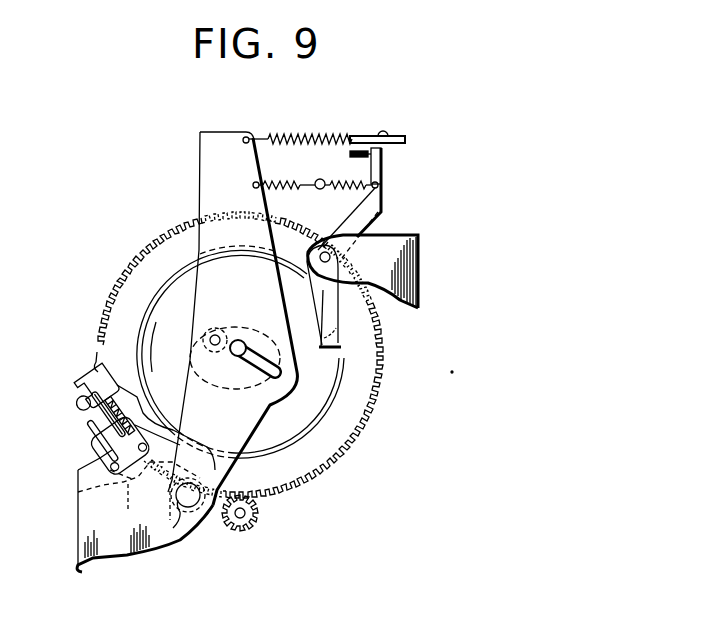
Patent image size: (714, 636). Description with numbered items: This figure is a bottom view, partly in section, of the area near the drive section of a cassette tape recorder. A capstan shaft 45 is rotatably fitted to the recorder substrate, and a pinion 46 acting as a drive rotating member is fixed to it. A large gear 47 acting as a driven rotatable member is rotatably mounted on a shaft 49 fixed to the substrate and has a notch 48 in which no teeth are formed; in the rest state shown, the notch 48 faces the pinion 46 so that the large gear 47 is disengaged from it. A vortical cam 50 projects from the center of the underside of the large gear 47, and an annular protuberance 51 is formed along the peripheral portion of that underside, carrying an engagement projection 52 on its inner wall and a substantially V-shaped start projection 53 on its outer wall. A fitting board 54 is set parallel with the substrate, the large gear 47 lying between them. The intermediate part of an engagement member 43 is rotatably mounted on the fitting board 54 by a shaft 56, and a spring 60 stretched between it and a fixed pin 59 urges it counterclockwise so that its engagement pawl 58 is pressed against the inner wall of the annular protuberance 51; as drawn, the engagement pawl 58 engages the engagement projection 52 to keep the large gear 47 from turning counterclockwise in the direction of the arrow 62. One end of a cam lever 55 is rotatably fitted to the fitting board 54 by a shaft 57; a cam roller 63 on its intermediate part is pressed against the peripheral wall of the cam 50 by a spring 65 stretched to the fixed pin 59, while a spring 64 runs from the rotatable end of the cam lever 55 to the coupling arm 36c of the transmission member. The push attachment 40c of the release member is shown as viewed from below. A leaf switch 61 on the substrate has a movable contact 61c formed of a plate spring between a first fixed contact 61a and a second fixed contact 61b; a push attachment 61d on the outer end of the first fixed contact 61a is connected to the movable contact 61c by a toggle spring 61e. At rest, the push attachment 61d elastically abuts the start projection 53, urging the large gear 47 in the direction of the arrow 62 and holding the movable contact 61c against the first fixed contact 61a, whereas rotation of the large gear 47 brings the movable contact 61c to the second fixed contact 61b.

The spring 64 is at (306, 134).
The coupling arm 36c is at (407, 129).
The cam lever 55 is at (203, 168).
The spring 65 is at (282, 180).
The fixed pin 59 is at (320, 179).
The spring 60 is at (350, 190).
The push attachment 40c is at (382, 161).
The engagement member 43 is at (383, 205).
The shaft 56 is at (313, 256).
The fitting board 54 is at (419, 278).
The cam roller 63 is at (216, 328).
The shaft 49 is at (243, 340).
The arrow 62 is at (167, 342).
The start projection 53 is at (154, 399).
The engagement pawl 58 is at (343, 334).
The vortical cam 50 is at (229, 388).
The engagement projection 52 is at (292, 379).
The large gear 47 is at (371, 404).
The annular protuberance 51 is at (325, 417).
The push attachment 61d is at (87, 378).
The toggle spring 61e is at (76, 405).
The leaf switch 61 is at (89, 430).
The second fixed contact 61b is at (78, 490).
The first fixed contact 61a is at (139, 478).
The movable contact 61c is at (120, 469).
The shaft 57 is at (176, 520).
The capstan shaft 45 is at (210, 518).
The notch 48 is at (259, 509).
The pinion 46 is at (246, 529).